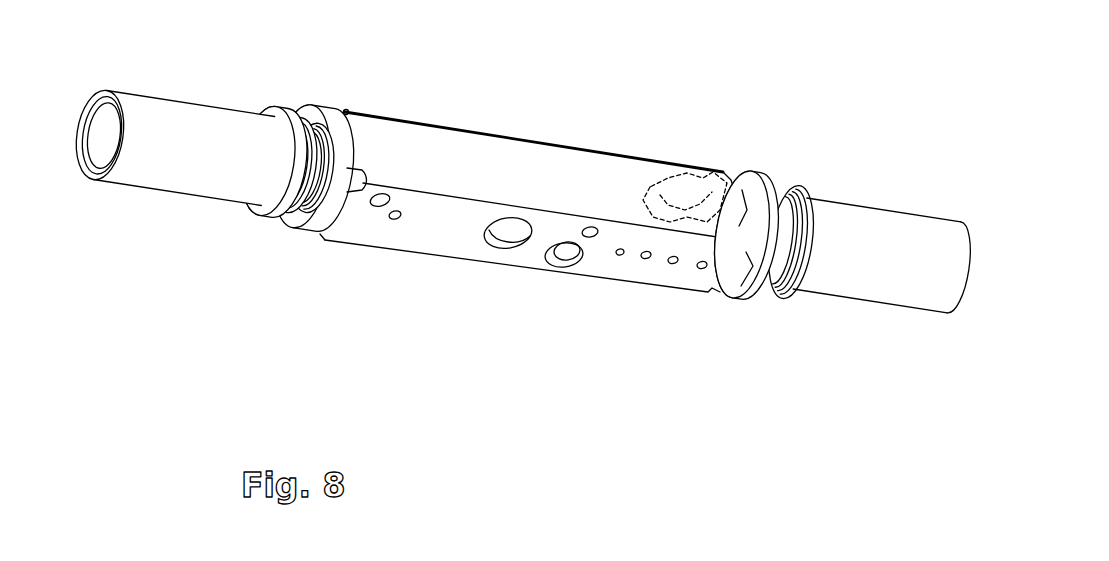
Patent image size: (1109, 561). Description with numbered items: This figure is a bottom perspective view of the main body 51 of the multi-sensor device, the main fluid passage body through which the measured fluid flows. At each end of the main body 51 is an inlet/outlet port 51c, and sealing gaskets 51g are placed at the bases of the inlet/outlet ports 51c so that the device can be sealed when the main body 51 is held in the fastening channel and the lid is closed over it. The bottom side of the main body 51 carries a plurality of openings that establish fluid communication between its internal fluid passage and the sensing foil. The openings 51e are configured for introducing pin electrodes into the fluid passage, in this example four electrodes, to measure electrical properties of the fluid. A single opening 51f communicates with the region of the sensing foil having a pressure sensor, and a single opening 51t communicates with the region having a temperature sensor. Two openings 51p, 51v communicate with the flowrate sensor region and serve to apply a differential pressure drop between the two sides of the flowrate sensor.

The main body 51 is at (533, 181).
The inlet/outlet ports 51c is at (883, 218).
The sealing gaskets 51g is at (763, 182).
The opening 51v is at (385, 216).
The opening 51p is at (508, 236).
The opening 51f is at (564, 255).
The opening 51t is at (592, 229).
The openings 51e is at (646, 258).